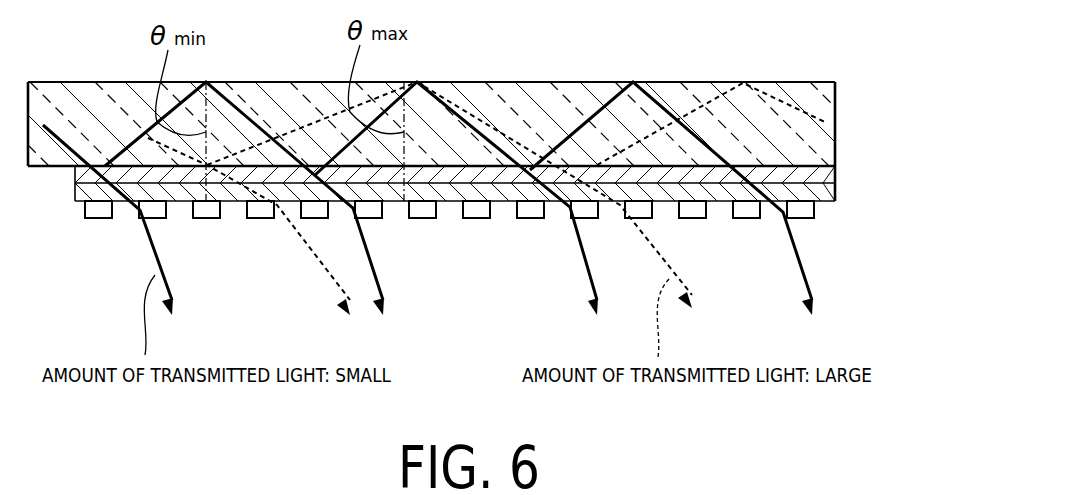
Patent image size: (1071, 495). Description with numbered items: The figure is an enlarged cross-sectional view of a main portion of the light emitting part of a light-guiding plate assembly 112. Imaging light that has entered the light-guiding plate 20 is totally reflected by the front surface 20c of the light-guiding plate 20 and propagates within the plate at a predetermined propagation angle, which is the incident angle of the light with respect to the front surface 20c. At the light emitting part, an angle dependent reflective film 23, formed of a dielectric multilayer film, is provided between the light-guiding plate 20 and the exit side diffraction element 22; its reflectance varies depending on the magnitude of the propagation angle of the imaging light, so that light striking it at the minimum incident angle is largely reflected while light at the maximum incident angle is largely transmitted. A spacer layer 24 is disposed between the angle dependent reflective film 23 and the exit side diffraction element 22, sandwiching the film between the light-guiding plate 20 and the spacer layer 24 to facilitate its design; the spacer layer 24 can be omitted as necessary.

The light guide unit 112 is at (468, 136).
The light-guiding plate 20 is at (468, 100).
The front surface 20c is at (597, 82).
The angle dependent reflective film 23 is at (827, 173).
The spacer layer 24 is at (827, 192).
The exit side diffraction element 22 is at (805, 212).